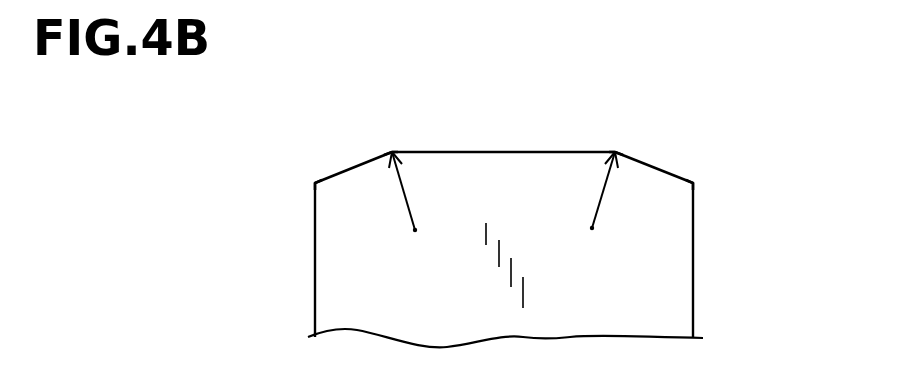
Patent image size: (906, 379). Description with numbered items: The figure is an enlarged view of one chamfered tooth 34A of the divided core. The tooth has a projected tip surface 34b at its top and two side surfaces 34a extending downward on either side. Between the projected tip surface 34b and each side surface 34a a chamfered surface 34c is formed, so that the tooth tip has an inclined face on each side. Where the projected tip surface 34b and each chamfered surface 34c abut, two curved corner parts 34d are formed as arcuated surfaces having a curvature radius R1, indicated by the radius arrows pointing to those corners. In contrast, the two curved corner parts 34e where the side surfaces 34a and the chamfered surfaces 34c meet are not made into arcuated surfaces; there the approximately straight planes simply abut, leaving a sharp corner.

The chamfered tooth 34A is at (650, 305).
The side surface 34a is at (315, 243).
The projected tip surface 34b is at (493, 150).
The chamfered surface 34c is at (345, 168).
The curved corner part 34d is at (392, 150).
The curved corner part 34e is at (315, 183).
The curvature radius R1 is at (503, 192).